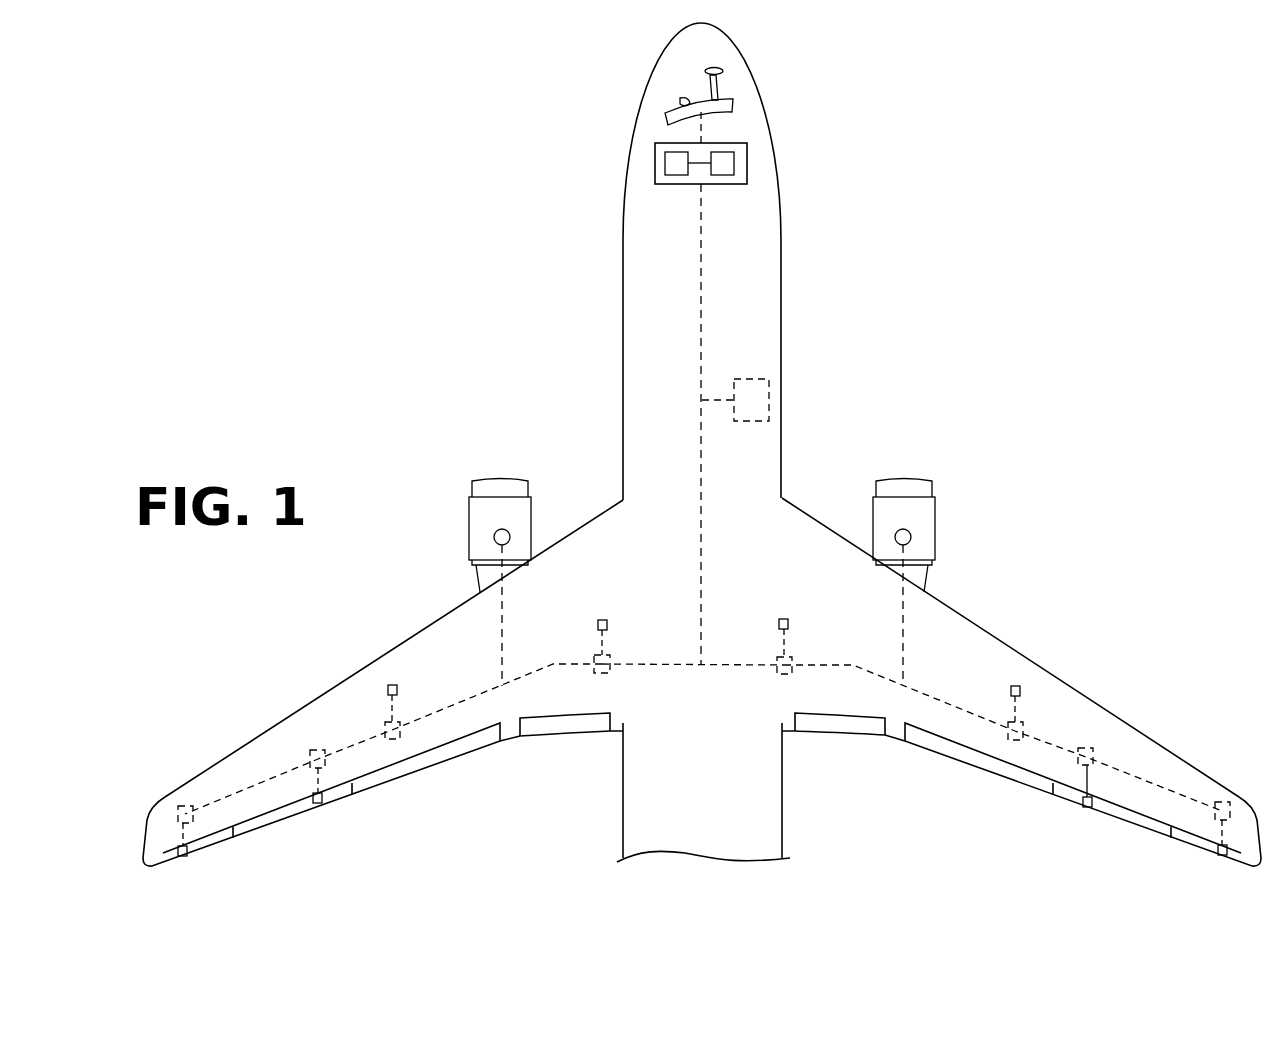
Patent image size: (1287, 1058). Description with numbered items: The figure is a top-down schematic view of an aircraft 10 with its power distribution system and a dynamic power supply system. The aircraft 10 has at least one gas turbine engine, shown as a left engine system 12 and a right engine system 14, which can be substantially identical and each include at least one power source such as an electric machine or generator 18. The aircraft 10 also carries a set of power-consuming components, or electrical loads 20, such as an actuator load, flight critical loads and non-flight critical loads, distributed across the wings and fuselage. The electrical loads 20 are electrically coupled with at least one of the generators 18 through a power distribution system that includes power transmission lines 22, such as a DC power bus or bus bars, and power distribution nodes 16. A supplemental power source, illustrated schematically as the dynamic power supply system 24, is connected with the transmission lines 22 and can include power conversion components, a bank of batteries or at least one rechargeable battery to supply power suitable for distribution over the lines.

The aircraft 10 is at (516, 56).
The left engine system 12 is at (498, 488).
The right engine system 14 is at (920, 488).
The power distribution nodes 16 is at (398, 738).
The generator 18 is at (511, 532).
The electrical loads 20 is at (668, 176).
The power transmission lines 22 is at (700, 368).
The dynamic power supply system 24 is at (740, 414).